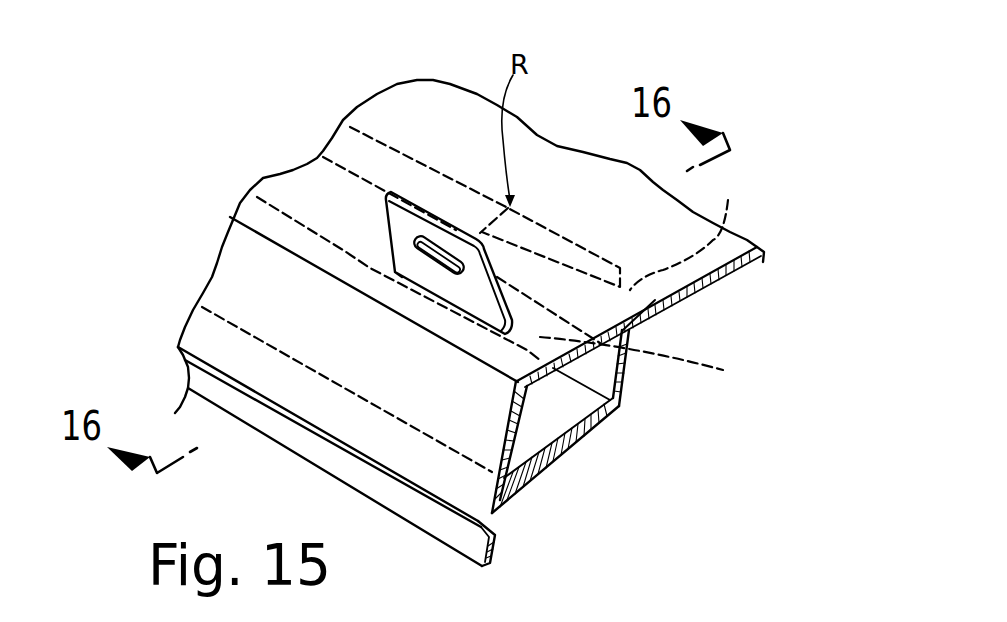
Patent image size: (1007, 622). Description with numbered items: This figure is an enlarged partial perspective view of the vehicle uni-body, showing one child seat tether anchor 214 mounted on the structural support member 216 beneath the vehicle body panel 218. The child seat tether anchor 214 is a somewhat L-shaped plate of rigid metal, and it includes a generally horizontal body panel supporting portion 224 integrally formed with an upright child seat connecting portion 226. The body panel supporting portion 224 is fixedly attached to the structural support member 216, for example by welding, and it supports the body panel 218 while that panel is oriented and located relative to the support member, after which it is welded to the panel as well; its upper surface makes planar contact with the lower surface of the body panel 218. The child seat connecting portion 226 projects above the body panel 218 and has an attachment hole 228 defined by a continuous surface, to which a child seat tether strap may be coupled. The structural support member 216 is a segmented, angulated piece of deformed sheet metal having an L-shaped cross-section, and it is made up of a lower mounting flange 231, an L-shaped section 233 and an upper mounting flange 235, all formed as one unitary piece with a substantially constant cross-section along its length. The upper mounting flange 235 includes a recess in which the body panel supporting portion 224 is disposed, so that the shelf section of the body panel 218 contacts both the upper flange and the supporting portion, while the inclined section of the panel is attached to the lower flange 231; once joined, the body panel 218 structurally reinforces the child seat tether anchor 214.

The child seat tether anchor 214 is at (370, 217).
The structural support member 216 is at (642, 387).
The vehicle body panel 218 is at (561, 109).
The body panel supporting portion 224 is at (660, 365).
The child seat connecting portion 226 is at (391, 230).
The attachment hole 228 is at (433, 254).
The lower mounting flange 231 is at (502, 496).
The L-shaped section 233 is at (563, 440).
The upper mounting flange 235 is at (695, 230).